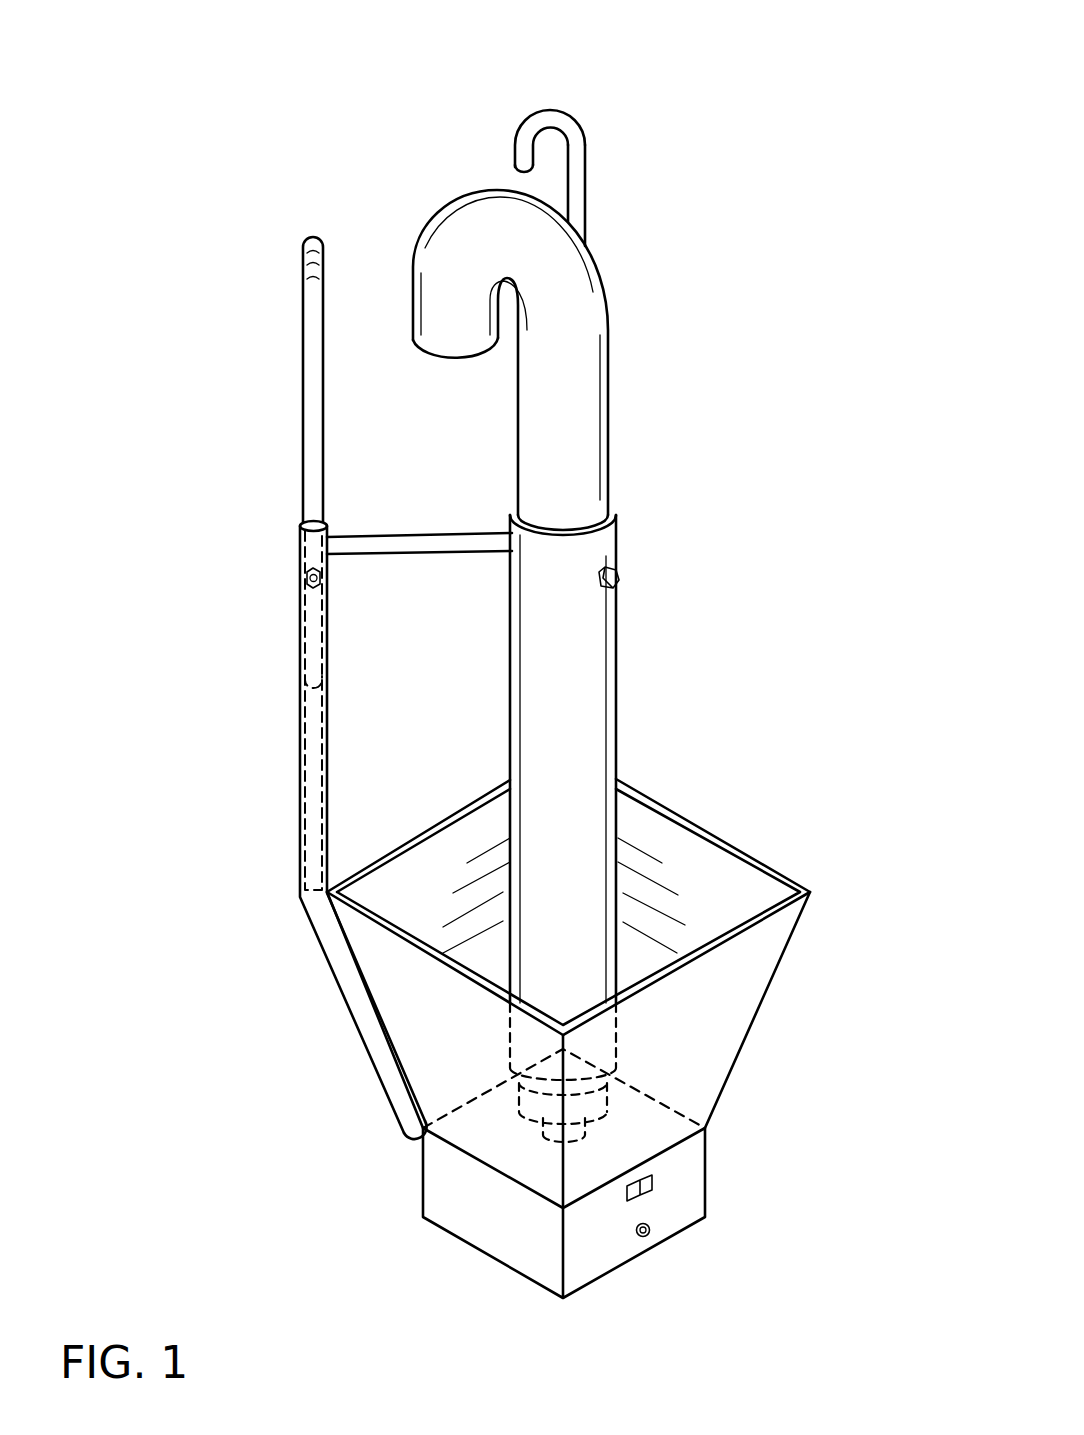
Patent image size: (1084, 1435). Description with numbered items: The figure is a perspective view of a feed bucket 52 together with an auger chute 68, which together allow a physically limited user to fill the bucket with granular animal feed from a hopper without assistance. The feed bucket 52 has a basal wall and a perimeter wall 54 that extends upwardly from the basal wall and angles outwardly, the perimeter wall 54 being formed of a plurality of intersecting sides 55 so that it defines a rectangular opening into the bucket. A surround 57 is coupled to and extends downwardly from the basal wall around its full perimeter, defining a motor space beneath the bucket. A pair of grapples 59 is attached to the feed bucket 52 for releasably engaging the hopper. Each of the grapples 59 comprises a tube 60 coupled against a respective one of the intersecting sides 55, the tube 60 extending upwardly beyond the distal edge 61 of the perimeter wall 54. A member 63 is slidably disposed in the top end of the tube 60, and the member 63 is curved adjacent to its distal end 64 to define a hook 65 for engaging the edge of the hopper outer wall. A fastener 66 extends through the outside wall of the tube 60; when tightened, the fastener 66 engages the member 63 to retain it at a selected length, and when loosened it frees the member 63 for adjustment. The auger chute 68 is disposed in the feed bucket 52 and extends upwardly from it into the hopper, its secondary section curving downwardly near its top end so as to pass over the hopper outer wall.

The feed bucket 52 is at (875, 900).
The perimeter wall 54 is at (789, 955).
The intersecting sides 55 is at (716, 824).
The surround 57 is at (600, 1247).
The grapples 59 is at (660, 187).
The tube 60 is at (296, 847).
The distal edge 61 is at (455, 803).
The member 63 is at (583, 147).
The distal end 64 is at (518, 170).
The hook 65 is at (526, 82).
The fastener 66 is at (306, 580).
The auger chute 68 is at (695, 530).